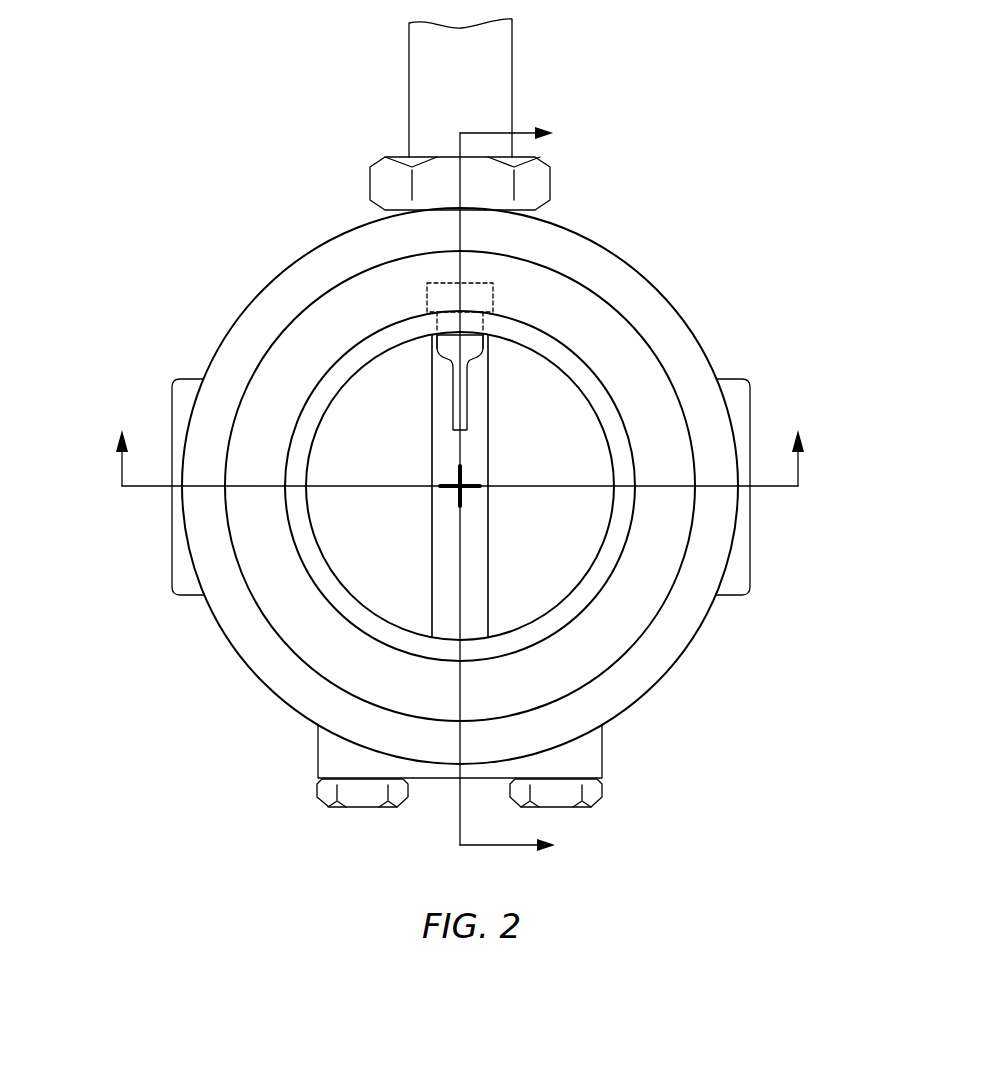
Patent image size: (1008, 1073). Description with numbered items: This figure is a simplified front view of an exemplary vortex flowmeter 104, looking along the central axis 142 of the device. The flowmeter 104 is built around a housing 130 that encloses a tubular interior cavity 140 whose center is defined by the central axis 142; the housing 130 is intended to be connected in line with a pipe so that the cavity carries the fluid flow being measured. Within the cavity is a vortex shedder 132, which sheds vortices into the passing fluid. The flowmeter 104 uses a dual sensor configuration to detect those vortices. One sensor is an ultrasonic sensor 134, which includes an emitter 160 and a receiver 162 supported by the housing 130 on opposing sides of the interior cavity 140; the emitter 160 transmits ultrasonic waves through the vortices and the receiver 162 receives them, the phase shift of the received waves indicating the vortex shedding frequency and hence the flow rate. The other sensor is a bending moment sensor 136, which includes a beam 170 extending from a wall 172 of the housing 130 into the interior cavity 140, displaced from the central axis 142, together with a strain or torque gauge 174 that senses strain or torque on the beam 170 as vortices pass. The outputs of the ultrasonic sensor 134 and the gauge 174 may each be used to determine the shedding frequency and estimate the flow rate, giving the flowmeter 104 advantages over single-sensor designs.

The vortex flowmeter 104 is at (142, 142).
The housing 130 is at (242, 332).
The vortex shedder 132 is at (482, 560).
The ultrasonic sensor 134 is at (790, 632).
The bending moment sensor 136 is at (380, 297).
The interior cavity 140 is at (352, 562).
The central axis 142 is at (462, 472).
The emitter 160 is at (738, 379).
The receiver 162 is at (178, 590).
The beam 170 is at (453, 405).
The wall 172 is at (527, 338).
The strain or torque gauge 174 is at (485, 292).